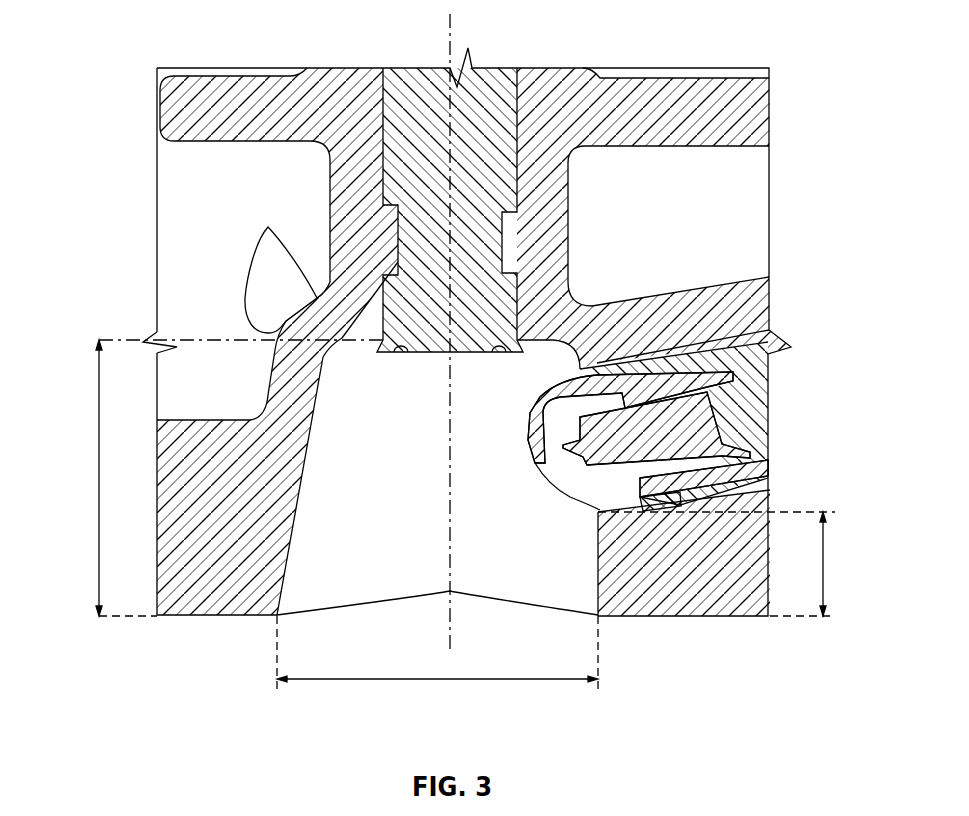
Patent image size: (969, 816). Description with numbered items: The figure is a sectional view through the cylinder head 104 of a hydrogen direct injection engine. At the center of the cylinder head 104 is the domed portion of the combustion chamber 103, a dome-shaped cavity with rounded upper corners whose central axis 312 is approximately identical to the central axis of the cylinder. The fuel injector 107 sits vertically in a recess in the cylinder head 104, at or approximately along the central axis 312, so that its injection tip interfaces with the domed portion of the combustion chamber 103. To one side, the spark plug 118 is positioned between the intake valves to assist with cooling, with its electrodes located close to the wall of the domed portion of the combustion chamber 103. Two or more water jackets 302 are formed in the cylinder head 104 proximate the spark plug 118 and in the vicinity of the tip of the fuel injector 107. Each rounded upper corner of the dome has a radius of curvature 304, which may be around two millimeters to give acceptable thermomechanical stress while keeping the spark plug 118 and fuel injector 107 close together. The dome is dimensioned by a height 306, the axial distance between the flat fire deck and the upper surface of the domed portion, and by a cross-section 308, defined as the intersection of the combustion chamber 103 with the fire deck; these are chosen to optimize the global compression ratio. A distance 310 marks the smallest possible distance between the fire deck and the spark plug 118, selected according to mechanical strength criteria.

The combustion chamber 103 is at (367, 474).
The cylinder head 104 is at (757, 117).
The fuel injector 107 is at (408, 78).
The spark plug 118 is at (755, 410).
The water jackets 302 is at (167, 192).
The radius of curvature 304 is at (343, 341).
The height 306 is at (97, 486).
The cross-section 308 is at (440, 684).
The distance 310 is at (825, 565).
The central axis 312 is at (450, 38).